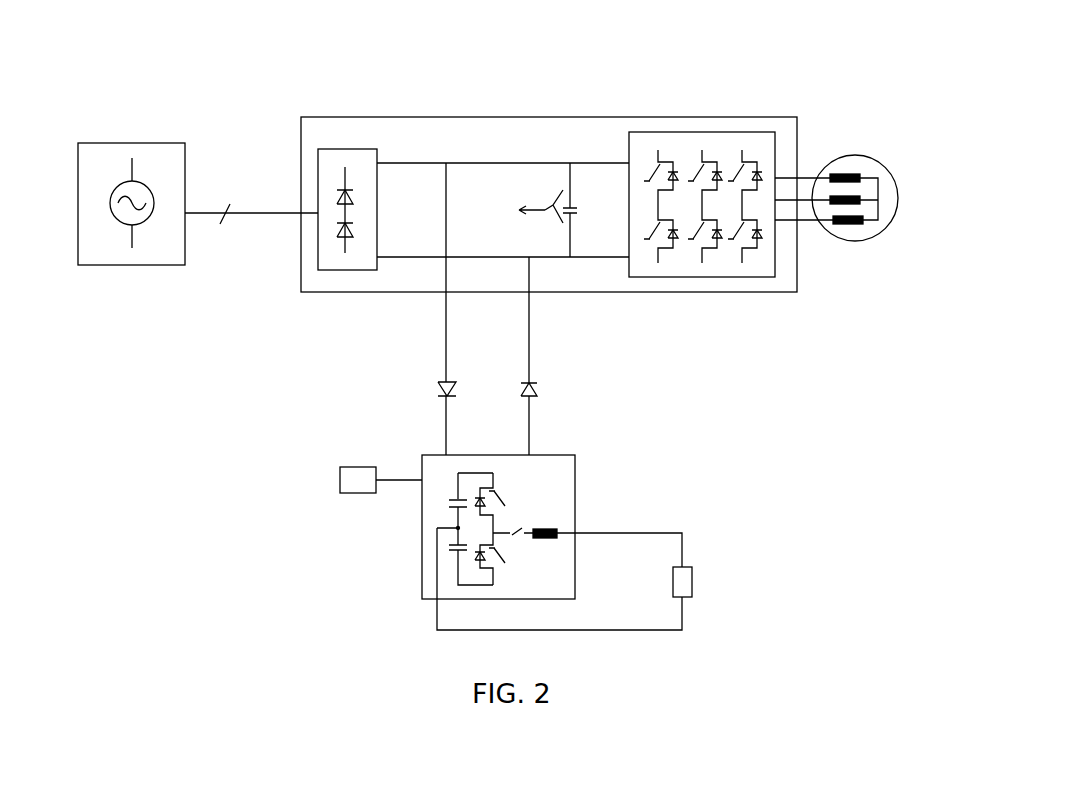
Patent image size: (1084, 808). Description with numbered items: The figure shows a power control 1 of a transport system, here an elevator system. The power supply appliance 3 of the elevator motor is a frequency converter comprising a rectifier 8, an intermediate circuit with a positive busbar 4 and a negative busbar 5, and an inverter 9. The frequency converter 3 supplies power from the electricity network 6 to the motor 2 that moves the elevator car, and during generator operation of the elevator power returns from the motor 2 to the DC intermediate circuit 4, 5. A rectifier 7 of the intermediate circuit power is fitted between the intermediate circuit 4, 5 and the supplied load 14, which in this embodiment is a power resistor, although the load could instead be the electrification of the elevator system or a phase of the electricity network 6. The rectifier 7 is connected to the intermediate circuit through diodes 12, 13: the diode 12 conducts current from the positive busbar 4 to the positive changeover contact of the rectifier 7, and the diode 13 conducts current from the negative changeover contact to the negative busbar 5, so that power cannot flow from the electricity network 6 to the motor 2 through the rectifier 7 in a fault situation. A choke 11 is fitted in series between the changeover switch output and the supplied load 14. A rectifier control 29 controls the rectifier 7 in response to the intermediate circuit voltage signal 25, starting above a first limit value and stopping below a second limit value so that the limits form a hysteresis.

The drive system 1 is at (583, 78).
The motor 2 is at (848, 155).
The power supply appliance 3 is at (471, 50).
The positive busbar of the intermediate circuit 4 is at (468, 162).
The negative busbar of the intermediate circuit 5 is at (585, 258).
The electricity network 6 is at (122, 143).
The rectifier of the intermediate circuit power 7 is at (422, 528).
The rectifier 8 is at (337, 148).
The inverter 9 is at (697, 132).
The choke 11 is at (548, 528).
The diode 12 is at (438, 388).
The diode 13 is at (537, 388).
The supplied load 14 is at (692, 580).
The intermediate circuit voltage signal 25 is at (540, 212).
The rectifier control 29 is at (352, 465).